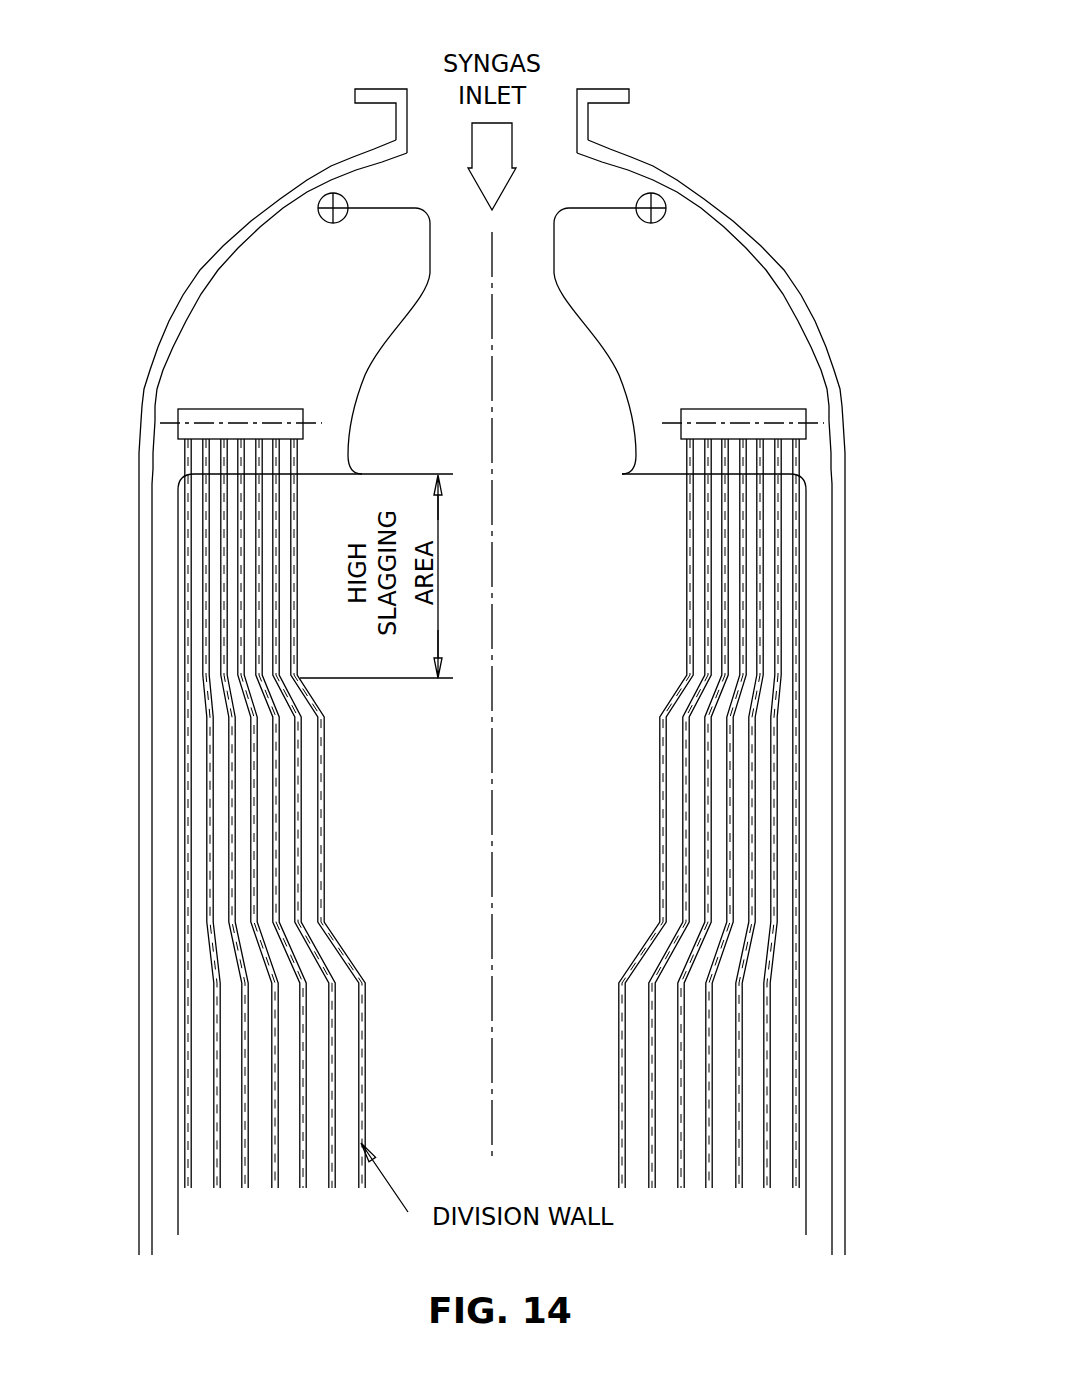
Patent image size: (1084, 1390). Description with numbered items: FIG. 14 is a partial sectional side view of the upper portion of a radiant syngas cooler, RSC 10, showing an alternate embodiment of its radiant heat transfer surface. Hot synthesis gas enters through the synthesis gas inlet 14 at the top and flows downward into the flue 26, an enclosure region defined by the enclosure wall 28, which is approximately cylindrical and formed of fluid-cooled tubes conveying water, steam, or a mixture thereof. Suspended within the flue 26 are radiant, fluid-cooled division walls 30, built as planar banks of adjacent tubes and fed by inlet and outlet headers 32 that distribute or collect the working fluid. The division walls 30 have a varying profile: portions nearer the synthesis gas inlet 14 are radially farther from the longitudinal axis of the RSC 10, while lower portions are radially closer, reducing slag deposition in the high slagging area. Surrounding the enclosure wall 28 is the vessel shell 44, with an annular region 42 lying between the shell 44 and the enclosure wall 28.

The radiant syngas cooler 10 is at (289, 110).
The synthesis gas inlet 14 is at (610, 72).
The flue 26 is at (515, 632).
The enclosure wall 28 is at (192, 1222).
The division wall 30 is at (760, 781).
The header 32 is at (312, 183).
The annular region 42 is at (836, 904).
The vessel shell 44 is at (725, 193).